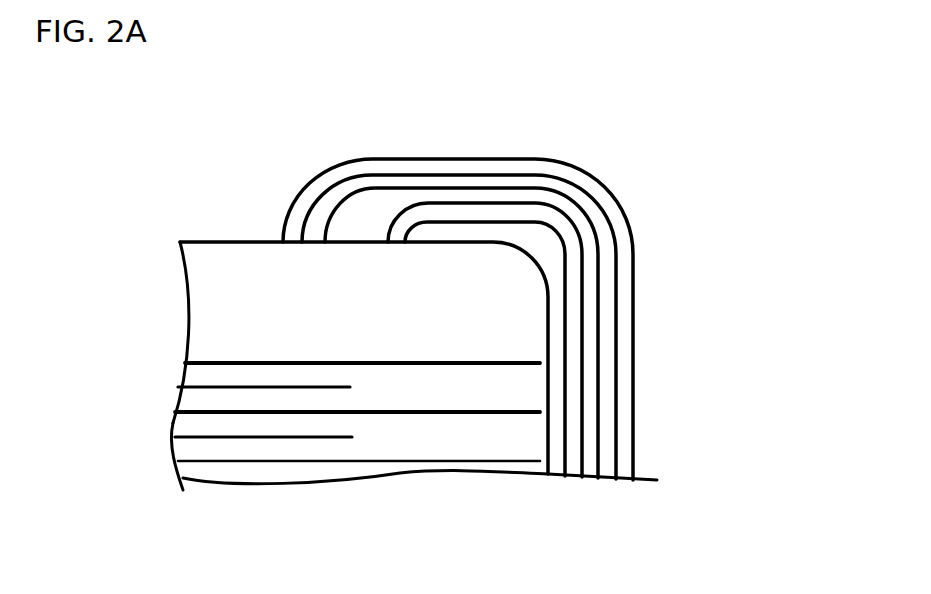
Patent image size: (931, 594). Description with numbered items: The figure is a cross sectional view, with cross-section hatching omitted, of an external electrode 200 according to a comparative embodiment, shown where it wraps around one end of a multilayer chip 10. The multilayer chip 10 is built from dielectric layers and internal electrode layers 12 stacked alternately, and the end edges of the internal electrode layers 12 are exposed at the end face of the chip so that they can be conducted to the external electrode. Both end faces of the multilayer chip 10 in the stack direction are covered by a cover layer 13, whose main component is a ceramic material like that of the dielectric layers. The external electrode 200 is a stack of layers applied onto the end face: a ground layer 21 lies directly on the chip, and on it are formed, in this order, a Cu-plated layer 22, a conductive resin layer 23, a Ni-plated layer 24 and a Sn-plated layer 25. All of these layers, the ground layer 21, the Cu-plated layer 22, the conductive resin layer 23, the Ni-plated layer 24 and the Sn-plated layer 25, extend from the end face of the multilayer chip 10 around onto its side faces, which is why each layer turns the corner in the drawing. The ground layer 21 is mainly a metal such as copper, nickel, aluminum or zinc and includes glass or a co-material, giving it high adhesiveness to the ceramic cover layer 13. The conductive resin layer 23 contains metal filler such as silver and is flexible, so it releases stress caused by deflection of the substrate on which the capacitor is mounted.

The multilayer chip 10 is at (383, 336).
The internal electrode layer 12 is at (410, 462).
The cover layer 13 is at (254, 282).
The ground layer 21 is at (558, 382).
The Cu-plated layer 22 is at (572, 322).
The conductive resin layer 23 is at (592, 272).
The Ni-plated layer 24 is at (598, 228).
The Sn-plated layer 25 is at (486, 303).
The external electrode 200 is at (564, 299).